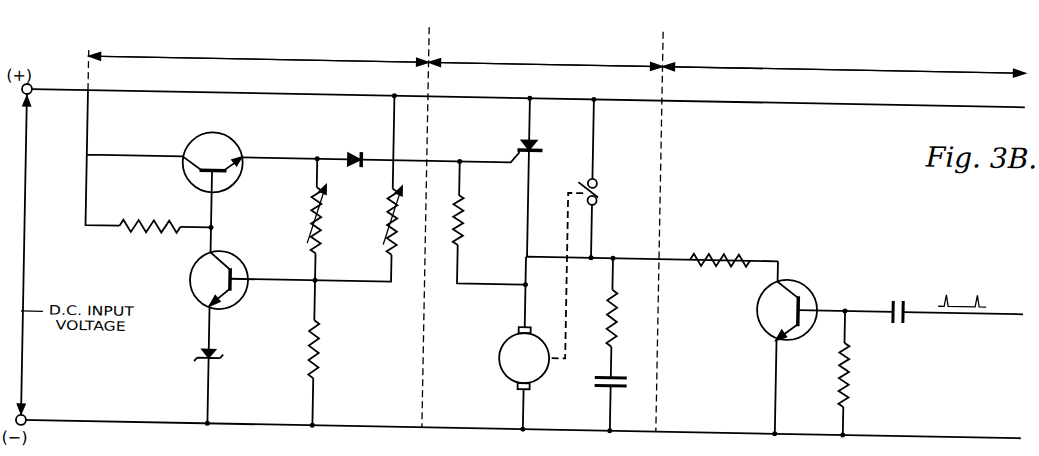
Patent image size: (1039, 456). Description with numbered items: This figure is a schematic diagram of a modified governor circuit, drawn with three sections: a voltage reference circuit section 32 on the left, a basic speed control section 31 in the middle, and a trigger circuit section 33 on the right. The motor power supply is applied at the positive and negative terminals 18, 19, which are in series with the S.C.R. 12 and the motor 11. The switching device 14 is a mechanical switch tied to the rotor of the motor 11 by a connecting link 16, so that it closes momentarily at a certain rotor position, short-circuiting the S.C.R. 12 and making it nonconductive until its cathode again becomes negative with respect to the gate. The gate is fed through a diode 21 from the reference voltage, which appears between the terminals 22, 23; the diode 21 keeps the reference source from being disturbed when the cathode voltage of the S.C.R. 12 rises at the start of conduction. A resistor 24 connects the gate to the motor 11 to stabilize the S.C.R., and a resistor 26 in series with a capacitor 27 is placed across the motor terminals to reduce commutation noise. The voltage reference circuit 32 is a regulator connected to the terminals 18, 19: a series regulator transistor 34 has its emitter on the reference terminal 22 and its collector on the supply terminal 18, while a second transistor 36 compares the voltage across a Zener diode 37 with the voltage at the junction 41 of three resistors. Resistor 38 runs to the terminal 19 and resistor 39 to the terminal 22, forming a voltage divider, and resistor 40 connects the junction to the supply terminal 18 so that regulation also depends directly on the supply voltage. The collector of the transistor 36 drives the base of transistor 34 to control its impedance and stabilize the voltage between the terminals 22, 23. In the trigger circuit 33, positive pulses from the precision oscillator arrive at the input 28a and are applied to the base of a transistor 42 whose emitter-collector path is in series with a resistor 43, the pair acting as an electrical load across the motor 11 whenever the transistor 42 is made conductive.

The power supply terminal 18 is at (31, 93).
The power supply terminal 19 is at (30, 416).
The voltage reference circuit section 32 is at (245, 81).
The basic speed control section 31 is at (540, 44).
The trigger circuit section 33 is at (823, 45).
The series regulator transistor 34 is at (234, 138).
The second transistor 36 is at (230, 249).
The Zener diode 37 is at (219, 348).
The resistor 38 is at (324, 342).
The resistor 39 is at (315, 187).
The resistor 40 is at (395, 252).
The junction 41 is at (320, 274).
The reference voltage terminal 22 is at (322, 135).
The diode 21 is at (358, 141).
The reference voltage terminal 23 is at (318, 422).
The resistor 24 is at (466, 217).
The S.C.R. 12 is at (534, 142).
The switching device 14 is at (600, 185).
The connecting link 16 is at (570, 286).
The motor 11 is at (512, 367).
The resistor 26 is at (620, 283).
The capacitor 27 is at (618, 368).
The resistor 43 is at (708, 242).
The transistor 42 is at (802, 270).
The pulse input from precision oscillator 28a is at (989, 282).